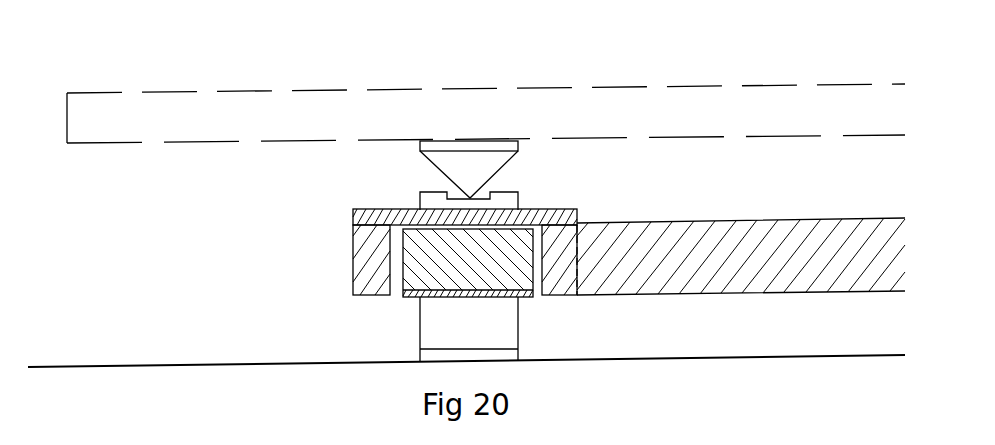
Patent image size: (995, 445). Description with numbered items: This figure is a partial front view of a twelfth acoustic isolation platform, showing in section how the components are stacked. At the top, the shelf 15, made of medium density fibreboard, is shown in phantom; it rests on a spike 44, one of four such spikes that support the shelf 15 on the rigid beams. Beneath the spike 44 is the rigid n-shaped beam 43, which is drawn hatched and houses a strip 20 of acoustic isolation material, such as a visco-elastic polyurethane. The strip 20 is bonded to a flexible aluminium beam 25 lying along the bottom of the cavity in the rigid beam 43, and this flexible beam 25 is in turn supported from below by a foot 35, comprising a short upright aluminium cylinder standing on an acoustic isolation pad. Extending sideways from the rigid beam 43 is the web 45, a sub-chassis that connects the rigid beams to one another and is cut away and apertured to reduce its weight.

The shelf 15 is at (665, 102).
The strip of acoustic isolation material 20 is at (503, 278).
The flexible aluminium beam 25 is at (405, 297).
The foot 35 is at (487, 328).
The rigid n-shaped beam 43 is at (366, 238).
The spike 44 is at (450, 170).
The web 45 is at (672, 242).